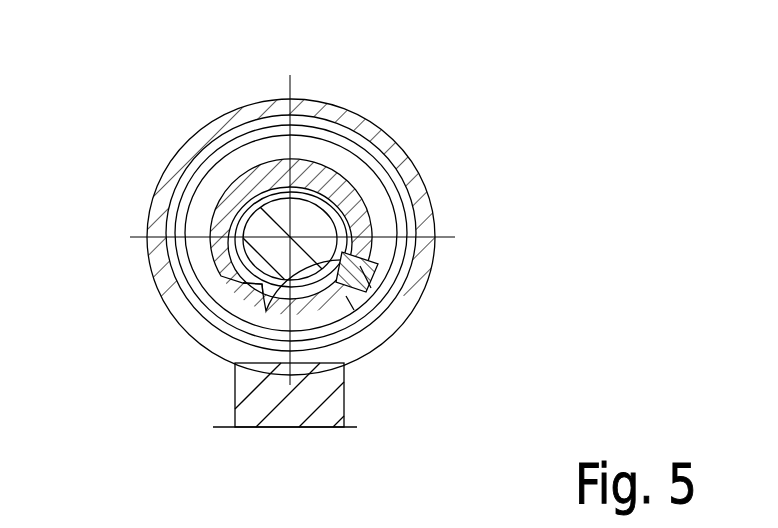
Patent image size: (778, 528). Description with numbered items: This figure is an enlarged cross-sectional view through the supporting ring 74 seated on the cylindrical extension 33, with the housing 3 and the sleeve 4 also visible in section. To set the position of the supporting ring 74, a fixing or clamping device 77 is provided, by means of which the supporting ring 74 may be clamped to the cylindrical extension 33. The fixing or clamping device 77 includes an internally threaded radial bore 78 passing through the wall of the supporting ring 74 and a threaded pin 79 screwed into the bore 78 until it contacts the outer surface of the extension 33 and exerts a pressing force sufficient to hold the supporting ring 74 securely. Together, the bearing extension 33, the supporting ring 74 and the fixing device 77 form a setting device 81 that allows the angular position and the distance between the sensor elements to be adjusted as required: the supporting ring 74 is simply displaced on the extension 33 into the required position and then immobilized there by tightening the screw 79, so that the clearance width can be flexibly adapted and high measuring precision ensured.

The housing 3 is at (163, 190).
The sleeve 4 is at (272, 218).
The cylindrical extension 33 is at (310, 196).
The supporting ring 74 is at (342, 198).
The fixing or clamping device 77 is at (352, 291).
The radial bore 78 is at (384, 296).
The threaded pin 79 is at (378, 291).
The setting device 81 is at (334, 305).